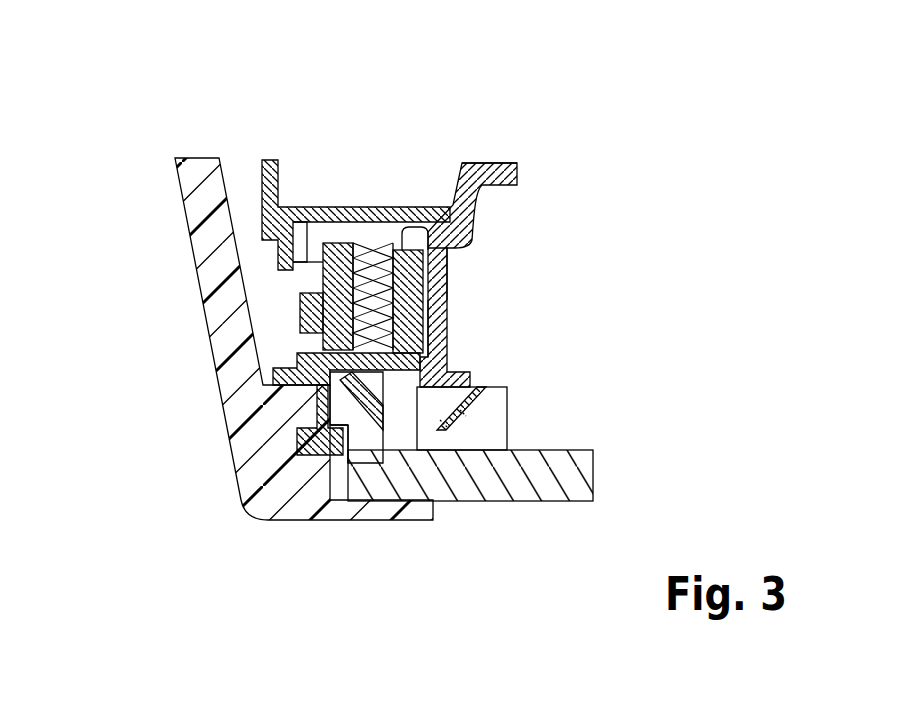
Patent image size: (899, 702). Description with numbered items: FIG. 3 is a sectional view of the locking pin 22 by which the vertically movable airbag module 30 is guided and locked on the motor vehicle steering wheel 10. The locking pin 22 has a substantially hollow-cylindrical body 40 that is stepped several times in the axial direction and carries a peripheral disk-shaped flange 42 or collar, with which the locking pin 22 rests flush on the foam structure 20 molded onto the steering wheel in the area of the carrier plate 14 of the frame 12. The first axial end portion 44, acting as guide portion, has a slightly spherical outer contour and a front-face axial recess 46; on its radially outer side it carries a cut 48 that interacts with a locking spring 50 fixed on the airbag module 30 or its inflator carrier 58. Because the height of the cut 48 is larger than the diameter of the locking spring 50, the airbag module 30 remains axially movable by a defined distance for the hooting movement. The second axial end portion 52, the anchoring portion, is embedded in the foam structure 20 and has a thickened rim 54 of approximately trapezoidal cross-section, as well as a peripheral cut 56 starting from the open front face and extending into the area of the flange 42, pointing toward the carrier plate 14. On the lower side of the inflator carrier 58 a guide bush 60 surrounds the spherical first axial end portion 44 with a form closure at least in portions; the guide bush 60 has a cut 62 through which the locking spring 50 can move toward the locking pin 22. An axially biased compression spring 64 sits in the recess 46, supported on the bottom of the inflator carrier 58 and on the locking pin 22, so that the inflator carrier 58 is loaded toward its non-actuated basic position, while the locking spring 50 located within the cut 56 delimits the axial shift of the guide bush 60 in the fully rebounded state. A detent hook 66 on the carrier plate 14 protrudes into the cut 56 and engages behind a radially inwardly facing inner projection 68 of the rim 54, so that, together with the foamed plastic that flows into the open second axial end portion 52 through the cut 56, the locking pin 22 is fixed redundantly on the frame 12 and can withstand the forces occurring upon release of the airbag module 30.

The motor vehicle steering wheel 10 is at (578, 156).
The frame 12 is at (470, 535).
The carrier plate 14 is at (520, 472).
The foam structure 20 is at (283, 424).
The locking pin 22 is at (326, 236).
The airbag module 30 is at (560, 234).
The hollow-cylindrical body 40 is at (416, 207).
The flange 42 is at (300, 384).
The first axial end portion 44 is at (447, 268).
The axial recess 46 is at (363, 207).
The cut 48 is at (336, 311).
The locking spring 50 is at (337, 292).
The second axial end portion 52 is at (481, 429).
The thickened rim 54 is at (300, 462).
The peripheral cut 56 is at (453, 417).
The inflator carrier 58 is at (490, 163).
The guide bush 60 is at (447, 300).
The cut 62 is at (325, 282).
The compression spring 64 is at (430, 339).
The detent hook 66 is at (355, 452).
The inner projection 68 is at (314, 442).